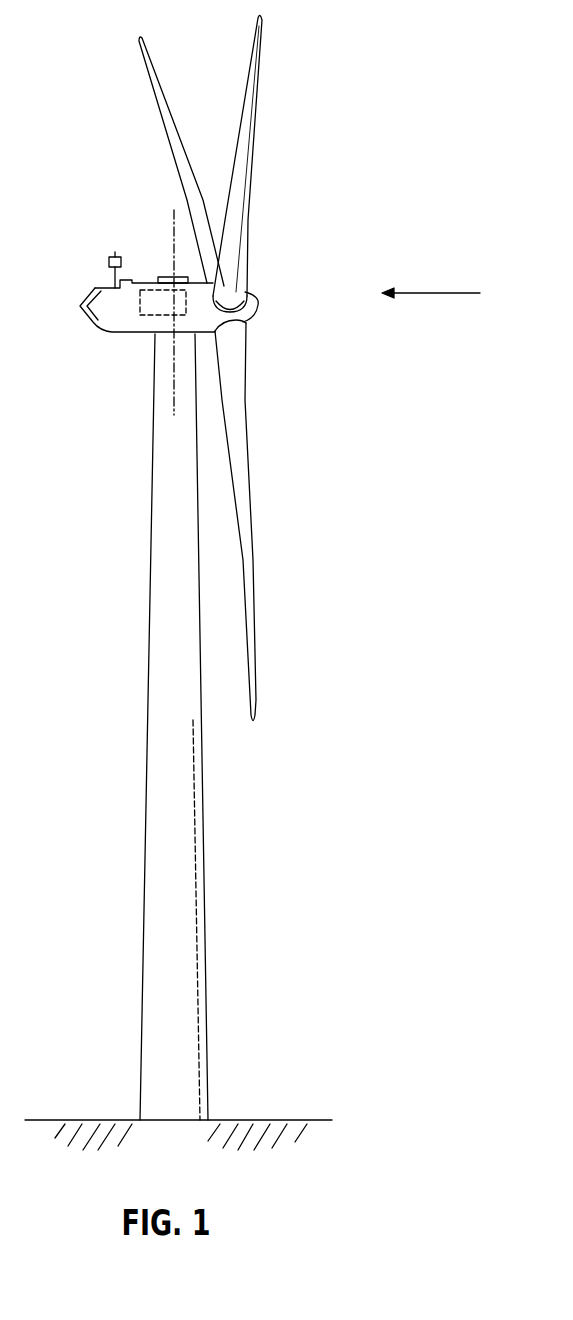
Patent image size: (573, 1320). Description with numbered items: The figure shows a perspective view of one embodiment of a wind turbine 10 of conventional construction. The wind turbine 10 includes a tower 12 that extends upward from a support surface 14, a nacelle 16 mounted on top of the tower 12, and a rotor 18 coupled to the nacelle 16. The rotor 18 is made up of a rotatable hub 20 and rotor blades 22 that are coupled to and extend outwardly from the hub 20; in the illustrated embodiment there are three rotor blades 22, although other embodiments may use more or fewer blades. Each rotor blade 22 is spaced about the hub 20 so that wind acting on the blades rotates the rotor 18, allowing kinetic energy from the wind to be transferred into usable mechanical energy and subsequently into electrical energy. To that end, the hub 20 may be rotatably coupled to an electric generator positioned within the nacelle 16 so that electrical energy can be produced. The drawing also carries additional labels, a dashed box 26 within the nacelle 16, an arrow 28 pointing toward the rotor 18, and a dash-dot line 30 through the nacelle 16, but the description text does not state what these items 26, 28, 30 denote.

The wind turbine 10 is at (383, 90).
The tower 12 is at (163, 803).
The support surface 14 is at (98, 1120).
The nacelle 16 is at (120, 335).
The rotor 18 is at (264, 284).
The rotatable hub 20 is at (254, 316).
The rotor blade 22 is at (247, 85).
The turbine controller 26 is at (155, 278).
The wind direction 28 is at (453, 292).
The yaw axis 30 is at (173, 211).